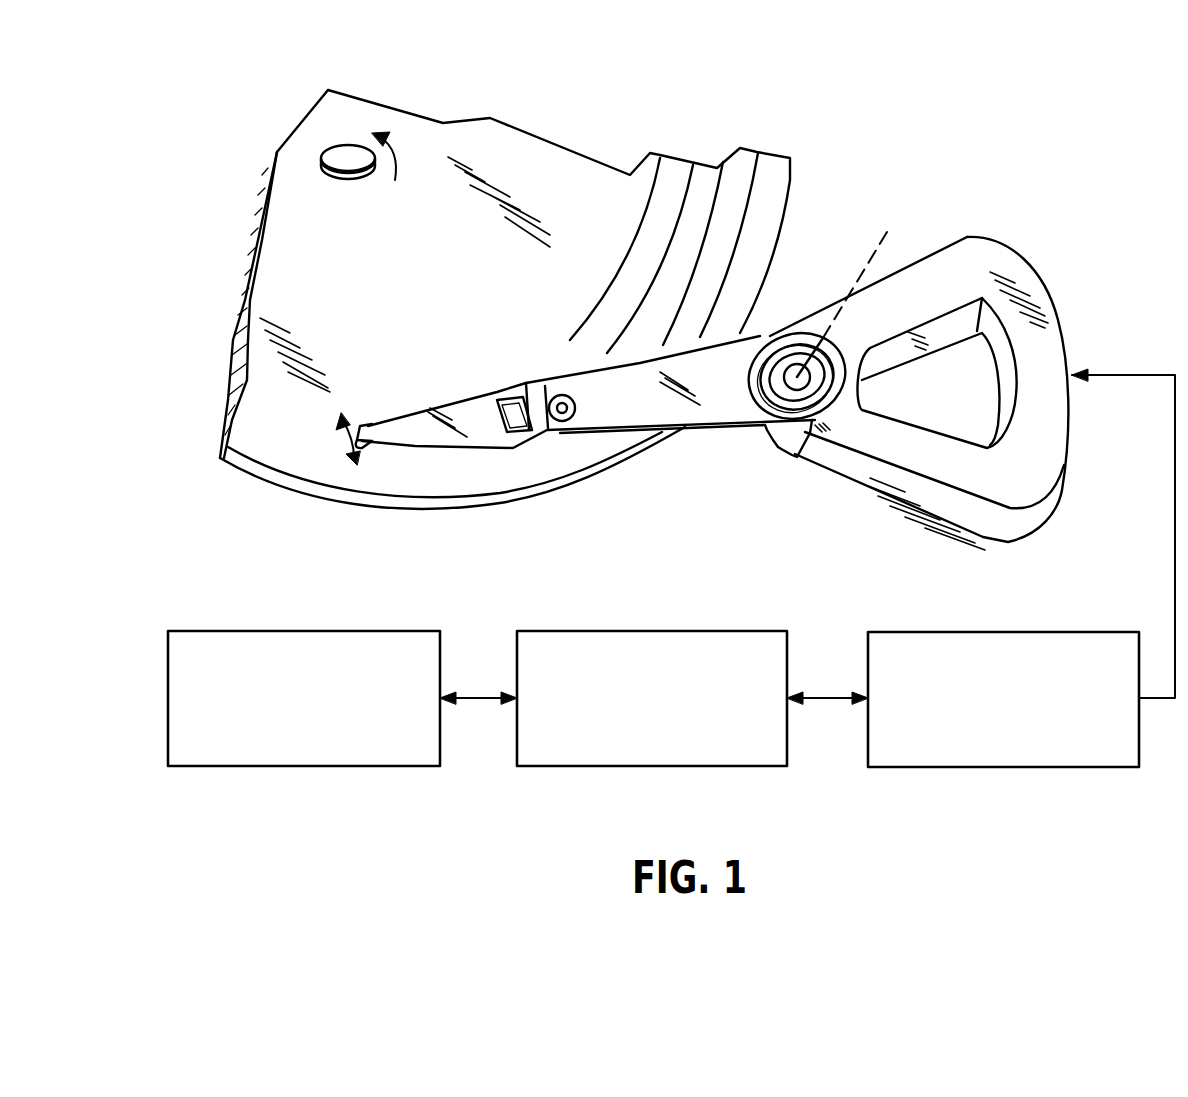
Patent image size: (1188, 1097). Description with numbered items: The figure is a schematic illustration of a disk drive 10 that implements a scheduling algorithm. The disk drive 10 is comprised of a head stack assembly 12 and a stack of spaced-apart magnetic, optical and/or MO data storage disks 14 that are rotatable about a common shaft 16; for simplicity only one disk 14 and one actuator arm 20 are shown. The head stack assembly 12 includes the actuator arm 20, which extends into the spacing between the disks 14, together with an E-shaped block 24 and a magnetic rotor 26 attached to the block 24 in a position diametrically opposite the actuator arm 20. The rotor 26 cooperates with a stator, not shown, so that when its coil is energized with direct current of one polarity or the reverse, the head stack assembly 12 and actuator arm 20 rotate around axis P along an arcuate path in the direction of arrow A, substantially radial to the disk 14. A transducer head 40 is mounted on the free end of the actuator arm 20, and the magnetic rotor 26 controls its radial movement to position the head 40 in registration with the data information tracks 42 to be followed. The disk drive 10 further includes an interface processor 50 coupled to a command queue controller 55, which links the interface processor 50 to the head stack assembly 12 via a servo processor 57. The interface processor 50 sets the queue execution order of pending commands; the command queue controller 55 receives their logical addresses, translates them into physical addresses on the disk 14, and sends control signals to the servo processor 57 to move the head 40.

The disk drive 10 is at (882, 90).
The head stack assembly 12 is at (690, 492).
The data storage disk 14 is at (587, 185).
The common shaft 16 is at (333, 153).
The actuator arm 20 is at (710, 412).
The E-shaped block 24 is at (783, 445).
The magnetic rotor 26 is at (977, 517).
The transducer head 40 is at (357, 445).
The data information tracks 42 is at (755, 172).
The interface processor 50 is at (283, 645).
The command queue controller 55 is at (633, 647).
The servo processor 57 is at (938, 647).